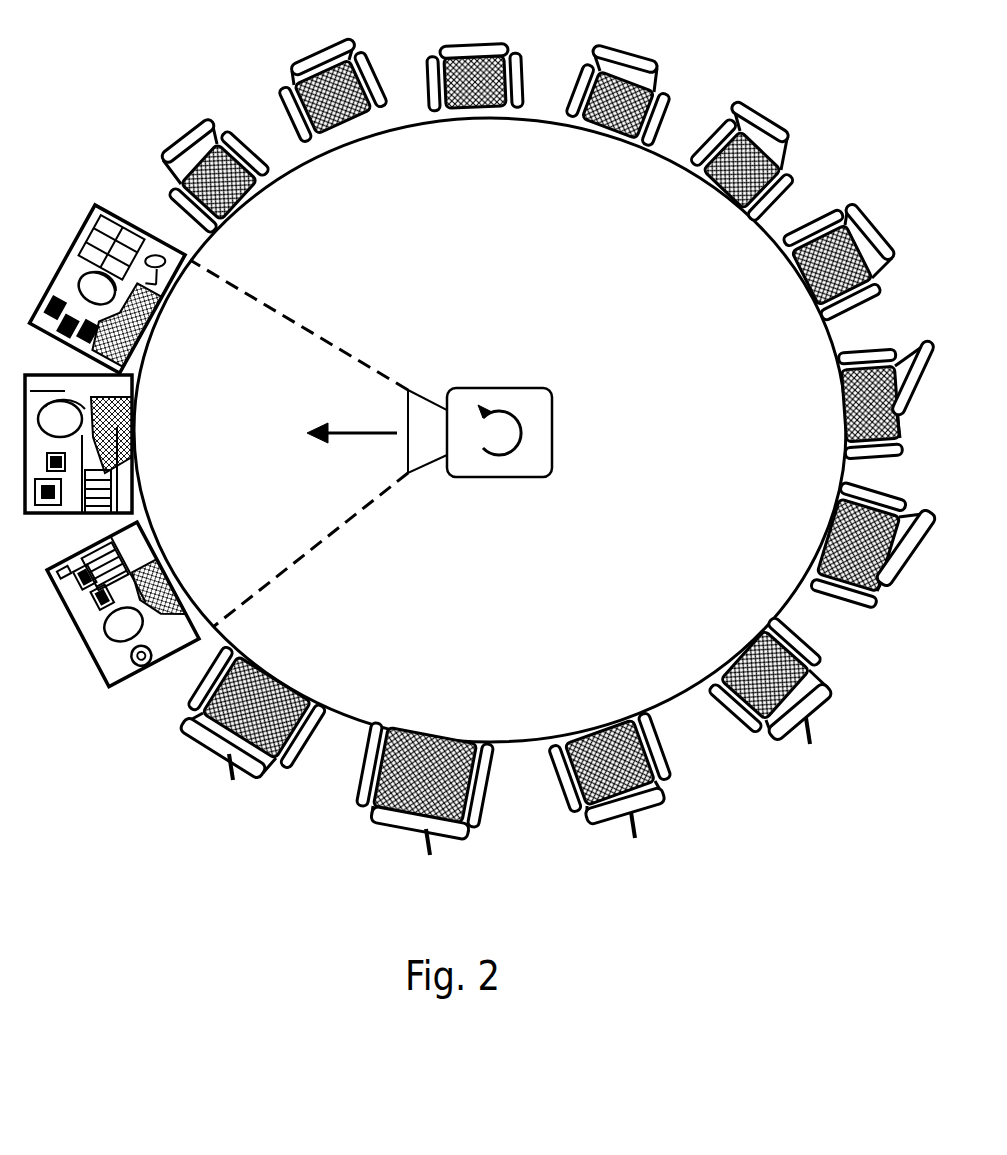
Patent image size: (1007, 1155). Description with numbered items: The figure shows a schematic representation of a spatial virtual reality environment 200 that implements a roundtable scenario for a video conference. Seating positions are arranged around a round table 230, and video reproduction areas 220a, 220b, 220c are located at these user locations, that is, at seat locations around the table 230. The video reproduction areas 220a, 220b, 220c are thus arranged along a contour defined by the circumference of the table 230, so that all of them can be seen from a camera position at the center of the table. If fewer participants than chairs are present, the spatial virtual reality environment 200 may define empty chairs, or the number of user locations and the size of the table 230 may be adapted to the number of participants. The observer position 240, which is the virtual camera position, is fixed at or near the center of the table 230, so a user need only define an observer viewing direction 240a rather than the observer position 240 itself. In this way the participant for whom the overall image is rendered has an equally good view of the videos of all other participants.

The spatial virtual reality environment 200 is at (232, 845).
The table 230 is at (540, 118).
The video reproduction area 220a is at (64, 262).
The video reproduction area 220b is at (50, 516).
The video reproduction area 220c is at (126, 686).
The observer position 240 is at (496, 386).
The observer viewing direction 240a is at (342, 434).